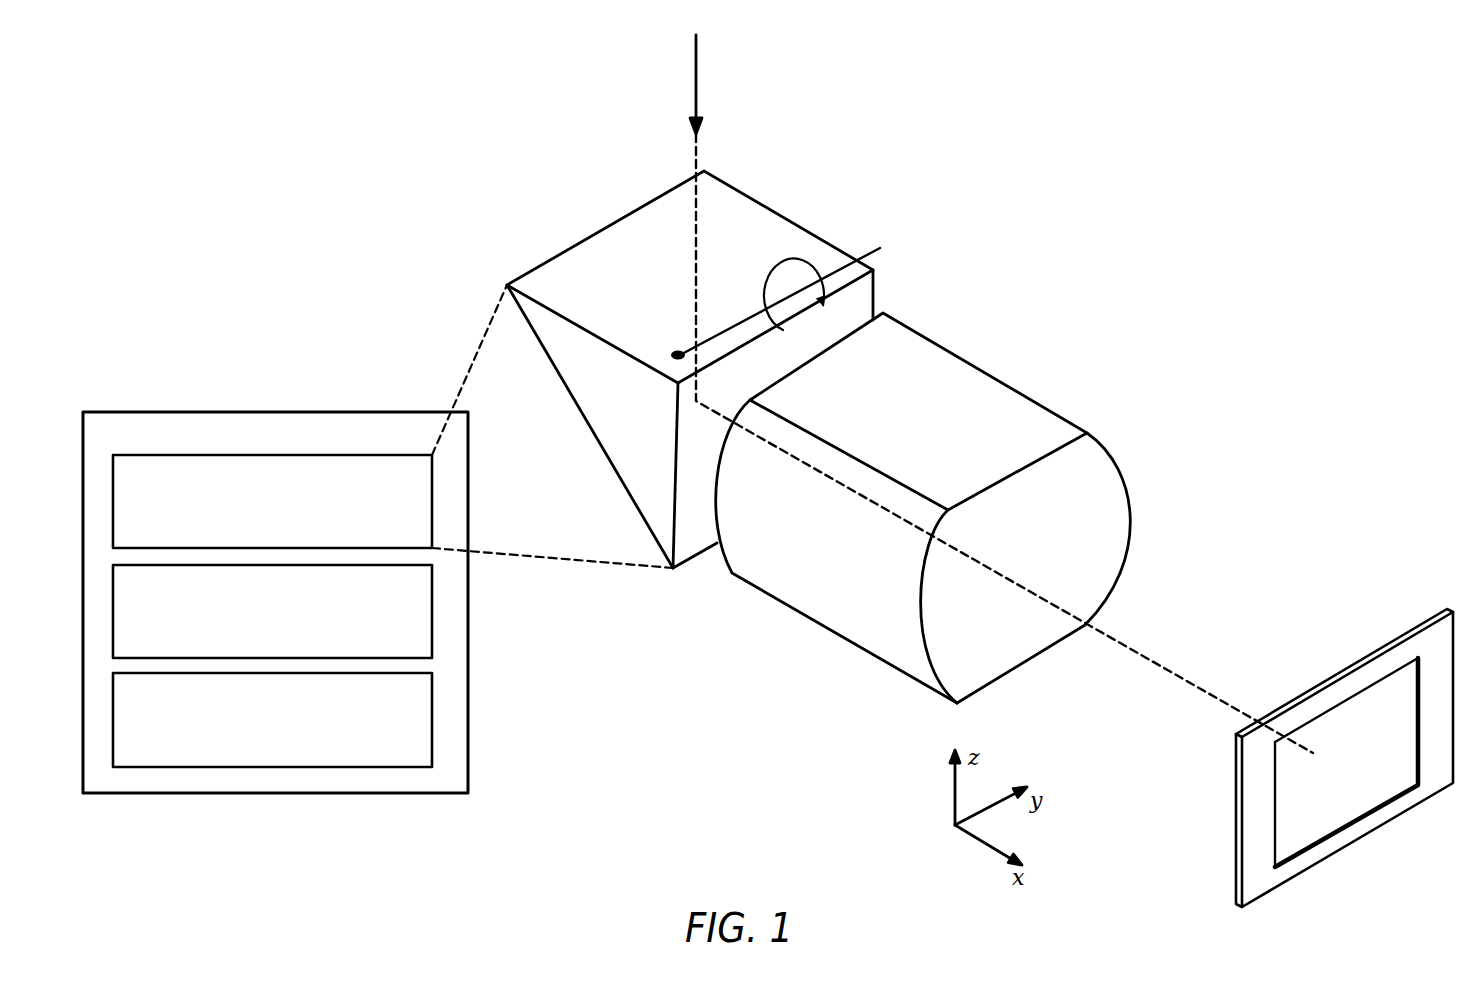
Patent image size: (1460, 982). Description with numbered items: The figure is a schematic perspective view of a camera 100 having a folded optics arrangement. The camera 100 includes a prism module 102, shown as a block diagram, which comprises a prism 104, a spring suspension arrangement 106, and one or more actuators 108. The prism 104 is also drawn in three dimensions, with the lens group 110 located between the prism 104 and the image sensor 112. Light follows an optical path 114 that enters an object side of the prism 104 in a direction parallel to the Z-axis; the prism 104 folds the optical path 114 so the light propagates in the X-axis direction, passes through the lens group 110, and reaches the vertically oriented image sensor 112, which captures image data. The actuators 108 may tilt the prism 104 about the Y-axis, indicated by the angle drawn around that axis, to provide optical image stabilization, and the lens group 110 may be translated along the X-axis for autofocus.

The camera 100 is at (783, 469).
The prism module 102 is at (367, 446).
The prism 104 is at (642, 427).
The spring suspension arrangement 106 is at (290, 650).
The actuator(s) 108 is at (290, 748).
The lens group 110 is at (862, 591).
The image sensor 112 is at (1377, 797).
The optical path 114 is at (1001, 392).